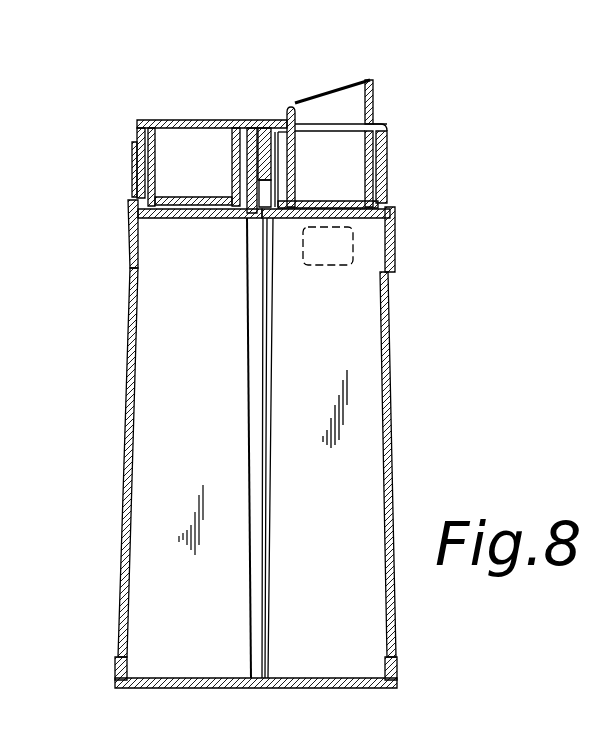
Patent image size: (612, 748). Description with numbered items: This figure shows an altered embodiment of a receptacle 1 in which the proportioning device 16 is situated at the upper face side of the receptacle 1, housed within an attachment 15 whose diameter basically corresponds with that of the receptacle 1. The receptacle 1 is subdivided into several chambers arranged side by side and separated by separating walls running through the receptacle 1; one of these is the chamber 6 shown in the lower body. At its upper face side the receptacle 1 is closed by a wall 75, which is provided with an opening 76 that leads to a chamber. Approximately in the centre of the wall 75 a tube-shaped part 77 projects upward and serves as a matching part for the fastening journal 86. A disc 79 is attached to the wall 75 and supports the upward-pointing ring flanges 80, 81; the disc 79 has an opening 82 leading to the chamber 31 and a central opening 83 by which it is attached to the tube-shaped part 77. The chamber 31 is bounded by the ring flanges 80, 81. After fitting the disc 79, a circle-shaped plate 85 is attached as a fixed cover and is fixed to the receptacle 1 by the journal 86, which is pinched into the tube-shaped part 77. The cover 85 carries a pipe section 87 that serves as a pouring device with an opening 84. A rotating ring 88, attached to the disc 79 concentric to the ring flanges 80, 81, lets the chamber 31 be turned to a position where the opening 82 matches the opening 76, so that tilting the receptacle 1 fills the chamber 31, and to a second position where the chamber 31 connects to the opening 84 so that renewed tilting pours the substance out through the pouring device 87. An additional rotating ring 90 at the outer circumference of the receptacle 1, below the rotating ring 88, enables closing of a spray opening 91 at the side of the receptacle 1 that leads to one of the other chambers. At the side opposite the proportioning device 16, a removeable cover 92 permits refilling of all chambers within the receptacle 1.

The receptacle 1 is at (387, 453).
The compartment 6 is at (202, 458).
The attachment 15 is at (100, 180).
The proportioning device 16 is at (187, 110).
The chamber 31 is at (185, 152).
The wall 75 is at (300, 213).
The opening 76 is at (198, 218).
The tube-shaped part 77 is at (255, 222).
The disc 79 is at (393, 204).
The ring flange 80 is at (301, 117).
The ring flange 81 is at (372, 165).
The opening 82 is at (190, 200).
The central opening 83 is at (243, 218).
The opening 84 is at (330, 128).
The circle-shaped plate 85 is at (210, 122).
The journal 86 is at (265, 135).
The pipe section 87 is at (375, 78).
The rotating ring 88 is at (387, 178).
The rotating ring 90 is at (393, 252).
The spray opening 91 is at (328, 258).
The removeable cover 92 is at (340, 690).